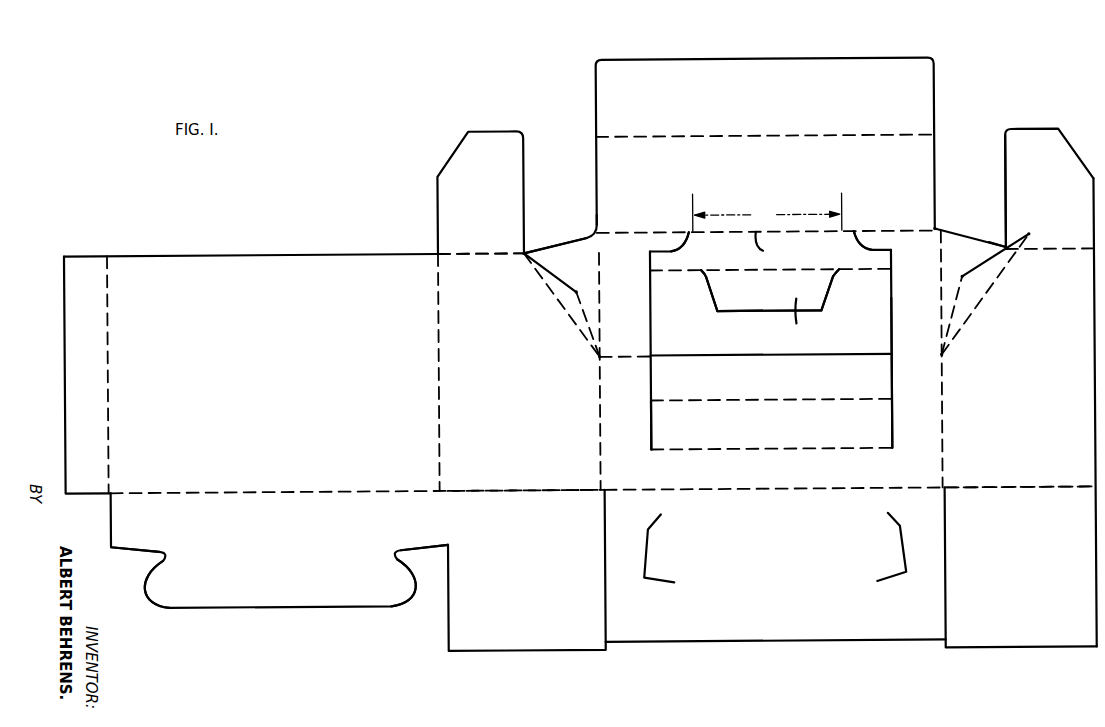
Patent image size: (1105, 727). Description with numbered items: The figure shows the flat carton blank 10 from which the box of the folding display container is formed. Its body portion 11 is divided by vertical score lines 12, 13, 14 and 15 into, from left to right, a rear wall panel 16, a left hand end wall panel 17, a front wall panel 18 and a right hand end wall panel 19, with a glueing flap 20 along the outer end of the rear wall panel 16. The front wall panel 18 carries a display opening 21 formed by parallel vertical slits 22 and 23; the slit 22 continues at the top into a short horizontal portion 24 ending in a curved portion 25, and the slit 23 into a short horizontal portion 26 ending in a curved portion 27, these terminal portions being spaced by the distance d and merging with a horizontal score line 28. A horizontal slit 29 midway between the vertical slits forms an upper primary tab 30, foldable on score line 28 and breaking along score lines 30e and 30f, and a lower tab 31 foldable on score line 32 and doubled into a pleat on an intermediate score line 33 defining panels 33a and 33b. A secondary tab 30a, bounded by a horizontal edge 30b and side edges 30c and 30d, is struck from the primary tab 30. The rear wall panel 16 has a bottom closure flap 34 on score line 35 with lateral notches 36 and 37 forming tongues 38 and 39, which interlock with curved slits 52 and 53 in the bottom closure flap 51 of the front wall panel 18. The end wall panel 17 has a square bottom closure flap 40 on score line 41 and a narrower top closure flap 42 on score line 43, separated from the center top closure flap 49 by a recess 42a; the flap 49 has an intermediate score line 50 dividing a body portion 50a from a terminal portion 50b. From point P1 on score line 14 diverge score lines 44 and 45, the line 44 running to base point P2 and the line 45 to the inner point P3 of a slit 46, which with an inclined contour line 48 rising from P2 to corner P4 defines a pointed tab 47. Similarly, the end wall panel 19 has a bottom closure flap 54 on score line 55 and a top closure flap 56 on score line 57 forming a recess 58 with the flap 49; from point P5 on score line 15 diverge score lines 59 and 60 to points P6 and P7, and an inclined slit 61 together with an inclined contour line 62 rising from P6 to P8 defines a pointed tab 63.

The carton blank 10 is at (310, 244).
The body portion 11 is at (140, 253).
The score line 12 is at (111, 374).
The score line 13 is at (437, 378).
The score line 14 is at (599, 308).
The score line 15 is at (941, 307).
The rear wall panel 16 is at (273, 373).
The left hand end wall panel 17 is at (520, 372).
The front wall panel 18 is at (772, 417).
The right hand end wall panel 19 is at (1019, 368).
The glueing flap 20 is at (66, 368).
The display opening 21 is at (888, 333).
The vertical slit 22 is at (652, 375).
The vertical slit 23 is at (892, 374).
The short horizontal portion 24 is at (666, 254).
The curved portion 25 is at (682, 243).
The short horizontal portion 26 is at (874, 254).
The curved portion 27 is at (862, 240).
The horizontal score line 28 is at (763, 238).
The horizontal slit 29 is at (742, 356).
The upper flap or primary tab 30 is at (670, 319).
The secondary tab 30a is at (796, 300).
The horizontal edge 30b is at (748, 314).
The side edge 30c is at (715, 304).
The side edge 30d is at (840, 298).
The score line 30e is at (712, 271).
The score line 30f is at (842, 271).
The lower flap or tab 31 is at (872, 422).
The horizontal score line 32 is at (742, 451).
The intermediate horizontal score line 33 is at (740, 402).
The panel 33a is at (669, 438).
The panel 33b is at (664, 388).
The bottom closure flap 34 is at (243, 605).
The horizontal score line 35 is at (238, 490).
The lateral recess or notch 36 is at (150, 554).
The lateral recess or notch 37 is at (398, 550).
The lateral closure tongue portion 38 is at (164, 590).
The lateral closure tongue portion 39 is at (394, 590).
The bottom closure flap 40 is at (519, 645).
The horizontal score line 41 is at (534, 489).
The top closure flap 42 is at (490, 148).
The intervening recess 42a is at (551, 186).
The horizontal score line 43 is at (489, 254).
The score line 44 is at (568, 320).
The score line 45 is at (570, 292).
The slit 46 is at (546, 266).
The pointed tab 47 is at (576, 245).
The inclined contour line 48 is at (552, 258).
The closure flap 49 is at (612, 154).
The intermediate horizontal score line 50 is at (800, 136).
The body portion 50a is at (711, 166).
The terminal portion 50b is at (782, 76).
The bottom closure flap 51 is at (745, 644).
The curved slit 52 is at (648, 550).
The curved slit 53 is at (904, 551).
The bottom closure flap 54 is at (1003, 639).
The horizontal score line 55 is at (987, 490).
The top closure flap 56 is at (1028, 150).
The horizontal score line 57 is at (1035, 252).
The intervening recess 58 is at (982, 178).
The score line 59 is at (964, 326).
The score line 60 is at (962, 306).
The inclined slit 61 is at (982, 258).
The inclined contour line 62 is at (953, 236).
The pointed tongue or tab 63 is at (982, 256).
The point P1 is at (598, 358).
The base point P2 is at (524, 253).
The inner point P3 is at (575, 290).
The point or corner P4 is at (598, 236).
The point P5 is at (944, 358).
The point P6 is at (1034, 233).
The point P7 is at (962, 280).
The point P8 is at (934, 230).
The distance d is at (767, 212).